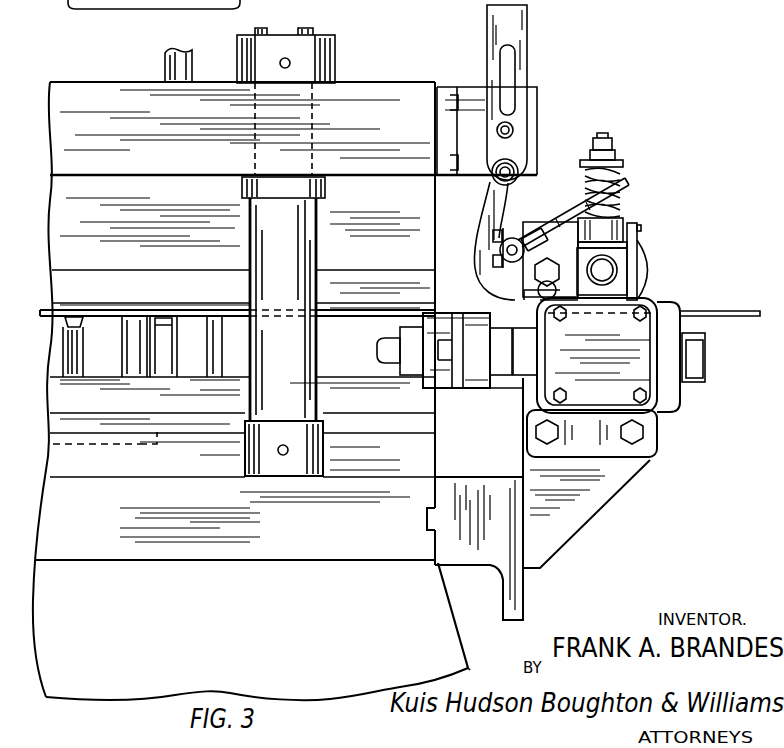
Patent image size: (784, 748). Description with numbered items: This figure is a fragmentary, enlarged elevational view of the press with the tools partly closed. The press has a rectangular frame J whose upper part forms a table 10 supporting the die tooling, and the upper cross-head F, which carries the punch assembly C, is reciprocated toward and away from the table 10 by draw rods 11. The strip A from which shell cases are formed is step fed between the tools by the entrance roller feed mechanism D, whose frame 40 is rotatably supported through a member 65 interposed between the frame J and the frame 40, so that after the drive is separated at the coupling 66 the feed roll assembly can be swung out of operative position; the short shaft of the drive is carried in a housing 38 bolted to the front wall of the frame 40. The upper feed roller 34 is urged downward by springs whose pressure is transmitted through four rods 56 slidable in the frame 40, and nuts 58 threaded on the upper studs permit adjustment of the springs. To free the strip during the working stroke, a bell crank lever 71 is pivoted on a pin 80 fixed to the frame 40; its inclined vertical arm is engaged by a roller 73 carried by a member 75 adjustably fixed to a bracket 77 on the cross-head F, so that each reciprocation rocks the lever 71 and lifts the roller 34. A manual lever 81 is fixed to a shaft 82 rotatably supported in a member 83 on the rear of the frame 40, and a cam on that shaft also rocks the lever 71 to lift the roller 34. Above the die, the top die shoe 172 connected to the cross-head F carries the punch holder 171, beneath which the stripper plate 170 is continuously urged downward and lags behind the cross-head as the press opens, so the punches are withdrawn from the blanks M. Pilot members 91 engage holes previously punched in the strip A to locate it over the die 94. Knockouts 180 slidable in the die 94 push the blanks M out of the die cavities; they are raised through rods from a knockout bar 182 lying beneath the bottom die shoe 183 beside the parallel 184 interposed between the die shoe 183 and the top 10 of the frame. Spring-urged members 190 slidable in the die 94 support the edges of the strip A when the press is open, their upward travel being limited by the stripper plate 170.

The table 10 is at (368, 548).
The draw rods 11 is at (262, 33).
The upper feed roller 34 is at (645, 268).
The housing 38 is at (680, 400).
The frame of the entrance feed roll assembly 40 is at (610, 487).
The rods 56 is at (635, 244).
The nuts 58 is at (620, 152).
The member 65 is at (482, 487).
The coupling 66 is at (477, 392).
The bell crank lever 71 is at (483, 205).
The roller 73 is at (520, 165).
The member 75 is at (520, 42).
The bracket 77 is at (535, 97).
The pin 80 is at (535, 301).
The lever 81 is at (618, 206).
The shaft 82 is at (500, 250).
The member 83 is at (517, 226).
The pilot members 91 is at (224, 372).
The die 94 is at (58, 385).
The stripper plate 170 is at (378, 312).
The punch holder 171 is at (385, 283).
The top die shoe 172 is at (380, 192).
The knockouts 180 is at (136, 354).
The knockout bar 182 is at (140, 446).
The bottom die shoe 183 is at (160, 402).
The parallel 184 is at (383, 462).
The members 190 is at (190, 366).
The strip A is at (731, 309).
The punch assembly C is at (65, 220).
The roller feed mechanism D is at (647, 232).
The upper cross-head F is at (93, 87).
The frame J is at (451, 666).
The blanks M is at (64, 322).